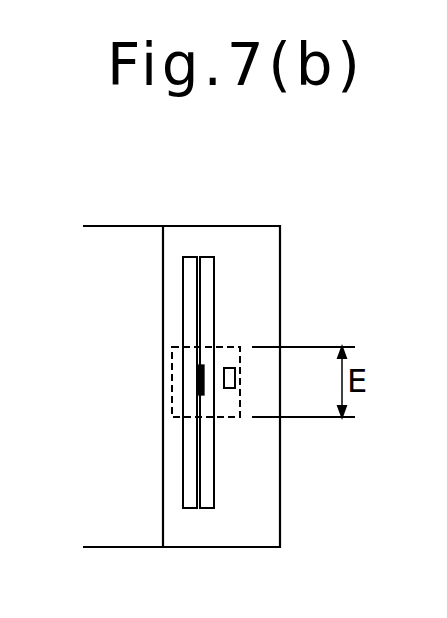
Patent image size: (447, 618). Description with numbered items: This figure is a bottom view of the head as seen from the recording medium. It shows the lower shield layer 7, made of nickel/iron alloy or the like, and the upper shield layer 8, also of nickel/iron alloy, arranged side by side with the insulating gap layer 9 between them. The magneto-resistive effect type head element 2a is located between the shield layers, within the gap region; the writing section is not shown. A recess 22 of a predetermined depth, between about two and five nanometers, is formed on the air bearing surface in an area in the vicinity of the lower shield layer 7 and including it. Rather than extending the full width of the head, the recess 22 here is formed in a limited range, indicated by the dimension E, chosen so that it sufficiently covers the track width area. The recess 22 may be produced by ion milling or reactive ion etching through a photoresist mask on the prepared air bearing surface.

The lower shield layer 7 is at (190, 257).
The upper shield layer 8 is at (207, 257).
The gap layer 9 is at (198, 257).
The magneto-resistive effect type head element 2a is at (202, 378).
The recess 22 is at (238, 390).